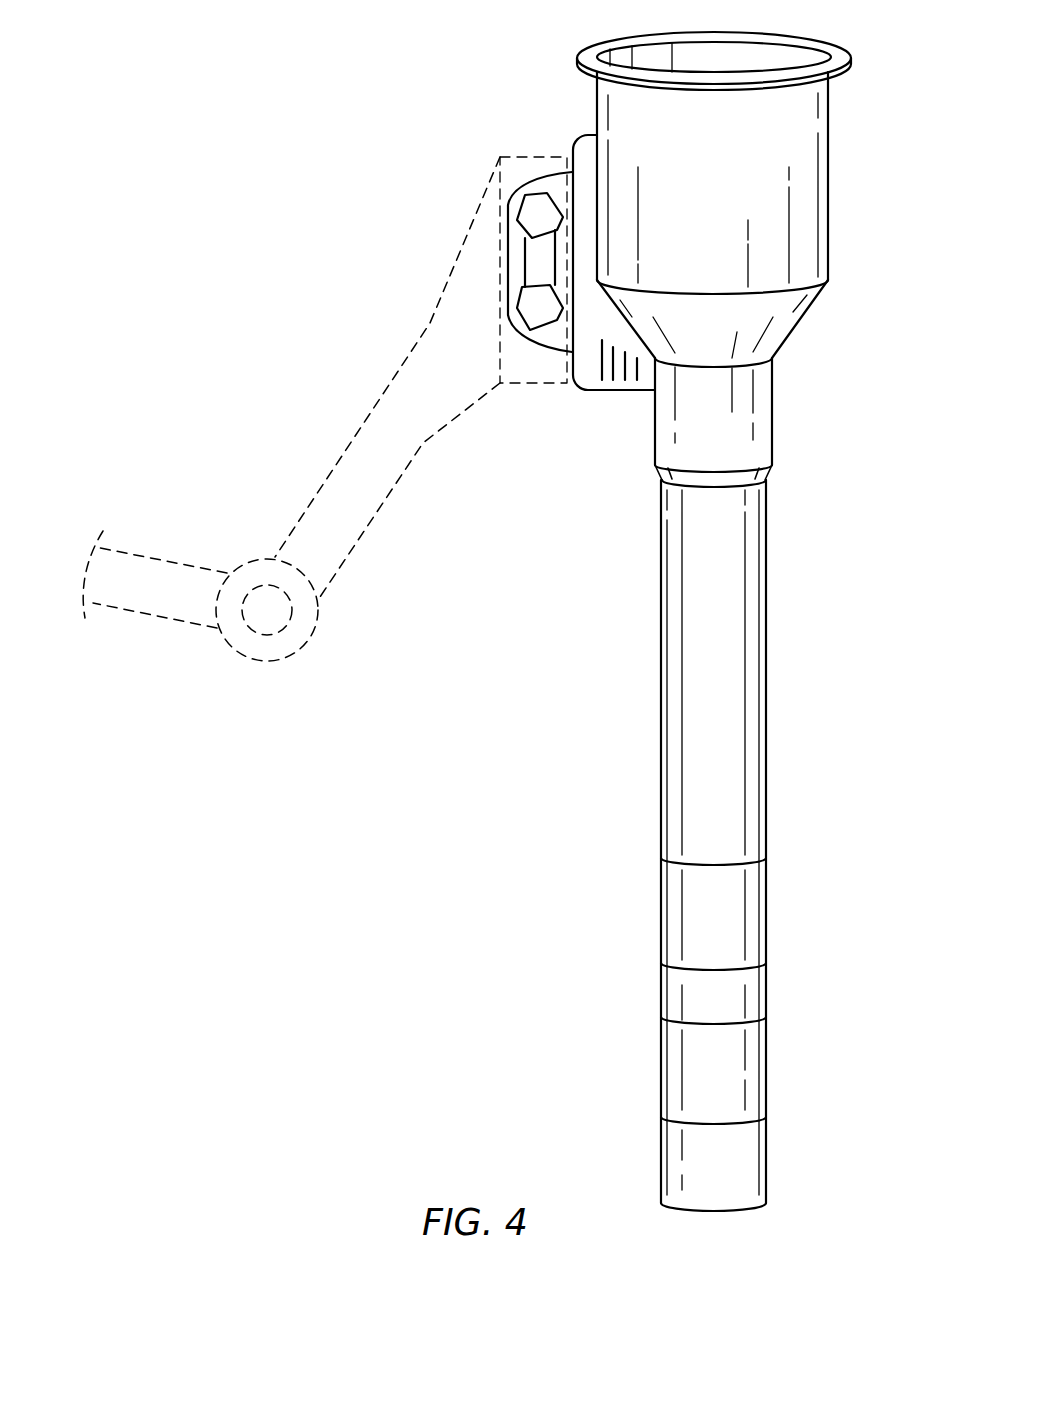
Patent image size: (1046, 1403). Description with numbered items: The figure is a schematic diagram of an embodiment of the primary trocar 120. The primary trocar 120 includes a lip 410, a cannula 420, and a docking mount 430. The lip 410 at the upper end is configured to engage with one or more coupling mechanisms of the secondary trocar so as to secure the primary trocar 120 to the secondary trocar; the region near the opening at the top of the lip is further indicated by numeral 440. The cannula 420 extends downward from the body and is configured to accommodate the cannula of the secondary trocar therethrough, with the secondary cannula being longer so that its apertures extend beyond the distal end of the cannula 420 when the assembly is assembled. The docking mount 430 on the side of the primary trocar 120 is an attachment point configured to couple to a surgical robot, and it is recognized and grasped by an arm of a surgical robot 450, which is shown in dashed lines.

The primary trocar 120 is at (503, 96).
The lip 410 is at (572, 37).
The cannula 420 is at (768, 653).
The docking mount 430 is at (516, 247).
The rim flange 440 is at (716, 56).
The arm of a surgical robot 450 is at (353, 443).